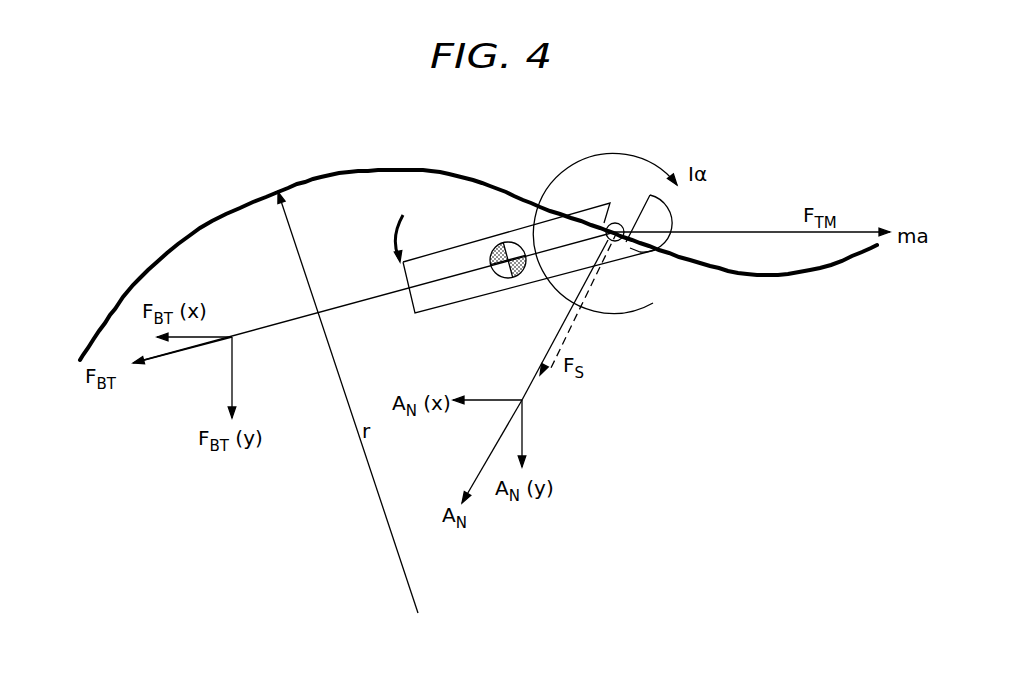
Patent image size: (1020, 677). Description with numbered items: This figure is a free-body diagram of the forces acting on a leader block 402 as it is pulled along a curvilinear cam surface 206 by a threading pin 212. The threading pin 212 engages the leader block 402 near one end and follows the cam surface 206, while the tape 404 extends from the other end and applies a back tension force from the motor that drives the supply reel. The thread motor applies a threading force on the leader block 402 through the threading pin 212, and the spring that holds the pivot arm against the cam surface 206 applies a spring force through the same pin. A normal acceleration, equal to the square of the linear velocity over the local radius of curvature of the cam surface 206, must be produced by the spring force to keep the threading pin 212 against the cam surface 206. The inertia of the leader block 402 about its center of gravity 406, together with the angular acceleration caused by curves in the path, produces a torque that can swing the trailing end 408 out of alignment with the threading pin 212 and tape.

The cam surface 206 is at (138, 277).
The threading pin 212 is at (618, 222).
The leader block 402 is at (478, 296).
The tape 404 is at (340, 307).
The center of gravity 406 is at (489, 262).
The trailing end 408 is at (407, 226).